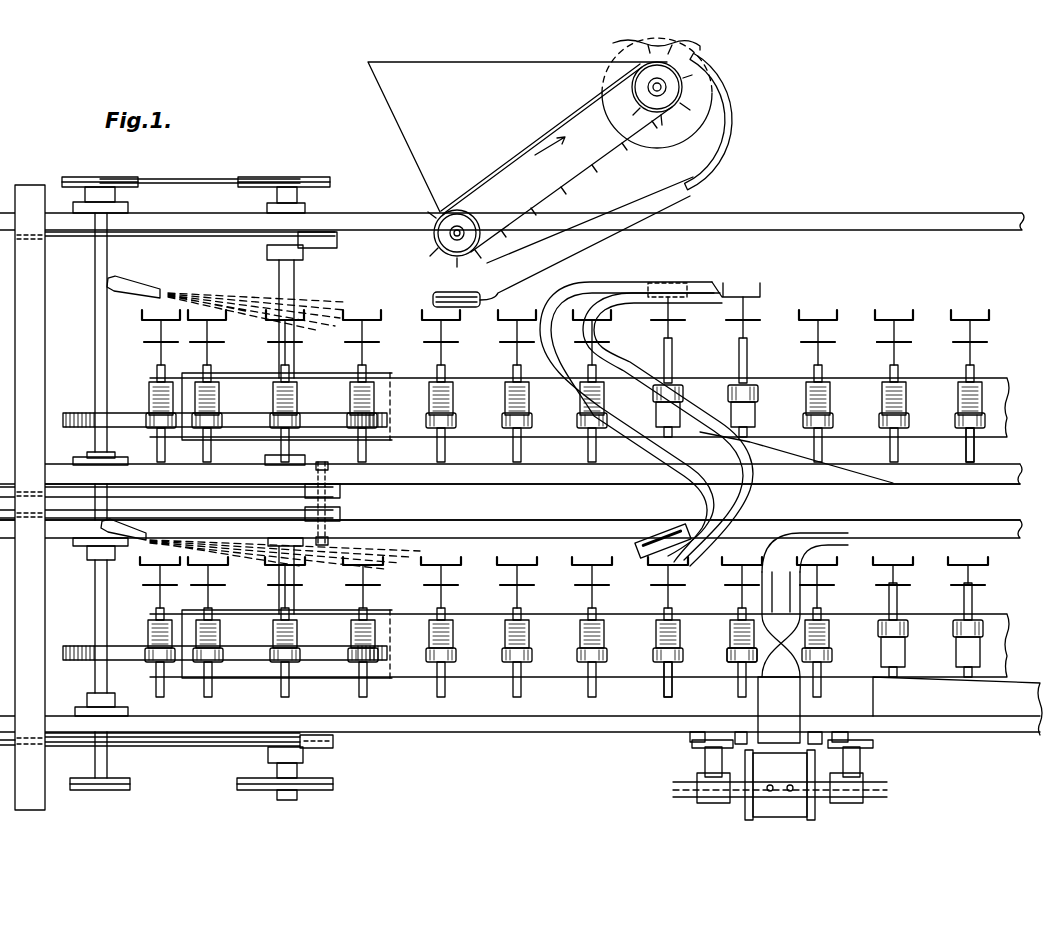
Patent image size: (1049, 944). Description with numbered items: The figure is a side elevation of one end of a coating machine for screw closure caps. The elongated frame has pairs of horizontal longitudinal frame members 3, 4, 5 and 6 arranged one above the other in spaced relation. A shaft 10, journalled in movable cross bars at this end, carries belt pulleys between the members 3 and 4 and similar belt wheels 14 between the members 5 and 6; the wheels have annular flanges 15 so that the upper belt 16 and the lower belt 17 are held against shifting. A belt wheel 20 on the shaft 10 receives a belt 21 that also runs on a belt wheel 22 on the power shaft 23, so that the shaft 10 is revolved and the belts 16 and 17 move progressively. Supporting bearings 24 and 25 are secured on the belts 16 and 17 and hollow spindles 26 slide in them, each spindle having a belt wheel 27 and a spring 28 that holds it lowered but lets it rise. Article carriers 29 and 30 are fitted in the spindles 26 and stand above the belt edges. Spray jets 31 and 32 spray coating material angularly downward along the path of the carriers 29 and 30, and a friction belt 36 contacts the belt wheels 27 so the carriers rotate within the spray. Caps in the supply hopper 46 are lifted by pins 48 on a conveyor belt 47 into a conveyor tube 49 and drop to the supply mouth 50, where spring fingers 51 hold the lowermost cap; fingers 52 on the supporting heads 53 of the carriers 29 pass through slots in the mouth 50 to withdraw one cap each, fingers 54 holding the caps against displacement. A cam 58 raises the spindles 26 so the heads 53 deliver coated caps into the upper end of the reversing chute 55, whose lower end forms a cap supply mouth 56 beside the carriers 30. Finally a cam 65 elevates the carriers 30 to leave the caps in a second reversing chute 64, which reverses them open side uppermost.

The longitudinal frame member 3 is at (760, 213).
The longitudinal frame member 4 is at (521, 478).
The longitudinal frame member 5 is at (544, 538).
The longitudinal frame member 6 is at (530, 733).
The shaft 10 is at (279, 280).
The belt wheel 14 is at (330, 614).
The annular flange 15 is at (390, 375).
The upper belt 16 is at (456, 386).
The lower belt 17 is at (548, 677).
The belt wheel 20 is at (283, 177).
The belt 21 is at (212, 180).
The belt wheel 22 is at (95, 170).
The power shaft 23 is at (95, 355).
The supporting bearing 24 is at (500, 410).
The supporting bearing 25 is at (600, 670).
The hollow spindle 26 is at (974, 455).
The belt wheel 27 is at (730, 658).
The spring 28 is at (730, 628).
The article carrier 29 is at (822, 330).
The article carrier 30 is at (893, 576).
The spray jet 31 is at (170, 292).
The spray jet 32 is at (150, 539).
The friction belt 36 is at (82, 647).
The supply hopper 46 is at (380, 88).
The conveyor belt 47 is at (578, 177).
The pin 48 is at (660, 130).
The conveyor tube 49 is at (736, 140).
The supply mouth 50 is at (443, 288).
The spring finger 51 is at (462, 292).
The finger 52 is at (912, 318).
The supporting head 53 is at (971, 325).
The finger 54 is at (880, 321).
The reversing chute 55 is at (590, 378).
The cap supply mouth 56 is at (650, 535).
The cam 58 is at (797, 455).
The second reversing chute 64 is at (848, 536).
The cam 65 is at (973, 730).